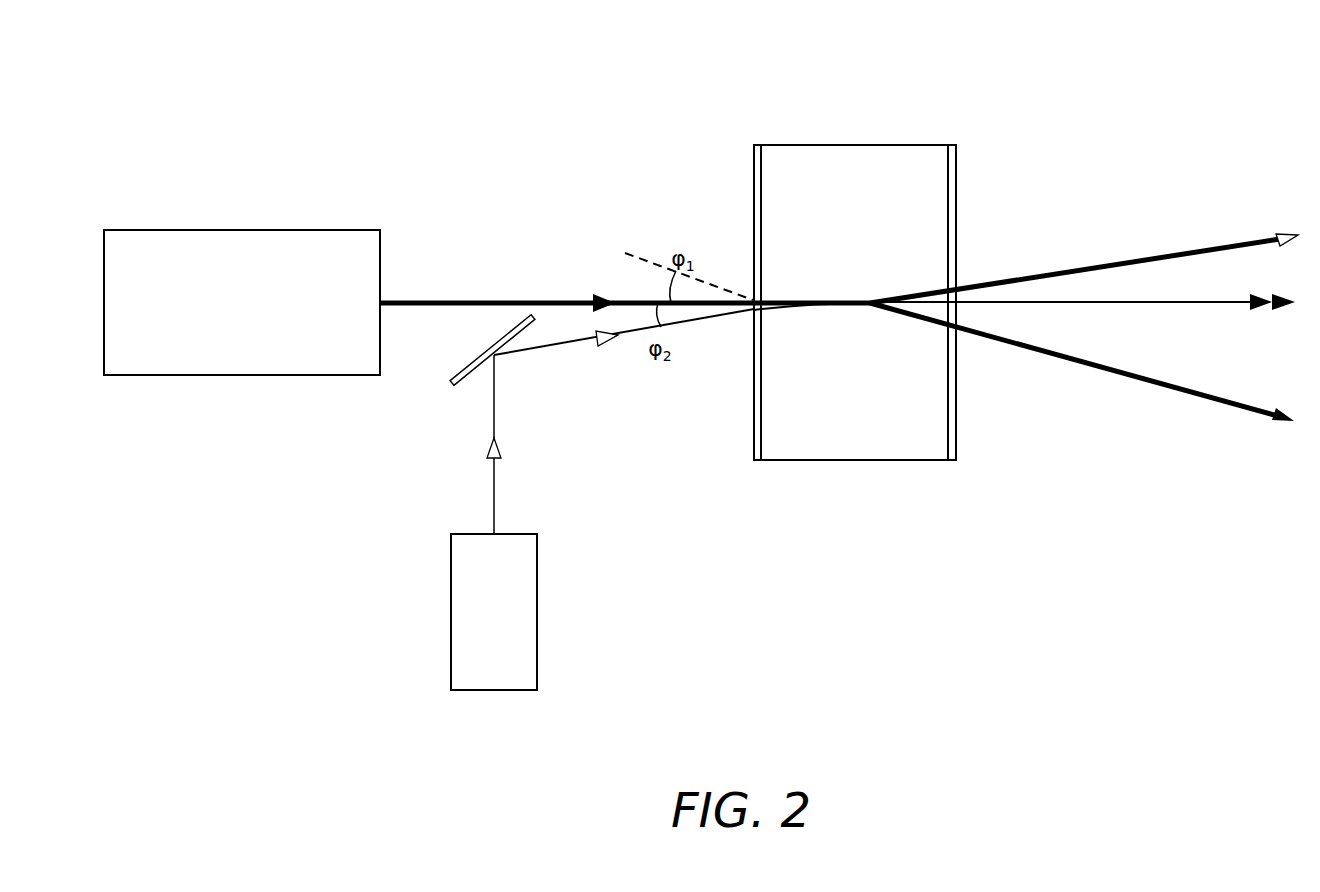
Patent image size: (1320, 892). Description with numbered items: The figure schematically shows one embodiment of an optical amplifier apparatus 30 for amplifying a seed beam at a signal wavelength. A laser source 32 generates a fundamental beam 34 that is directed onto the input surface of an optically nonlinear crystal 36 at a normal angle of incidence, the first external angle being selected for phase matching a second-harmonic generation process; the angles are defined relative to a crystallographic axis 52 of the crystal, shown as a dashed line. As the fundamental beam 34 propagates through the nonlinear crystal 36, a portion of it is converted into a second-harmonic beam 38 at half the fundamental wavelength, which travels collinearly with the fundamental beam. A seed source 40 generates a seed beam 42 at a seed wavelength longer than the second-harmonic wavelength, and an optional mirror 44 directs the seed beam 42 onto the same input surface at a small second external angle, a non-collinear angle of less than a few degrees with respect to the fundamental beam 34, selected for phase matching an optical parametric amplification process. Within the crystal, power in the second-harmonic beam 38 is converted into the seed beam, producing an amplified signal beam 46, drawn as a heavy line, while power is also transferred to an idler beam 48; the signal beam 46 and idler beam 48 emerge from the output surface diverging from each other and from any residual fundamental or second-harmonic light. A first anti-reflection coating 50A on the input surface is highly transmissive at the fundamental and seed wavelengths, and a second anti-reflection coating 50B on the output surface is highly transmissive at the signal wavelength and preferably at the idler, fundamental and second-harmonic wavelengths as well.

The optical amplifier apparatus 30 is at (384, 108).
The laser source 32 is at (242, 302).
The fundamental beam 34 is at (567, 288).
The optically nonlinear crystal 36 is at (855, 302).
The second-harmonic beam 38 is at (1024, 316).
The seed source 40 is at (494, 612).
The seed beam 42 is at (678, 418).
The mirror 44 is at (484, 350).
The signal beam 46 is at (1026, 259).
The idler beam 48 is at (1082, 368).
The first anti-reflection coating 50A is at (757, 136).
The second anti-reflection coating 50B is at (956, 136).
The crystallographic axis 52 is at (689, 261).